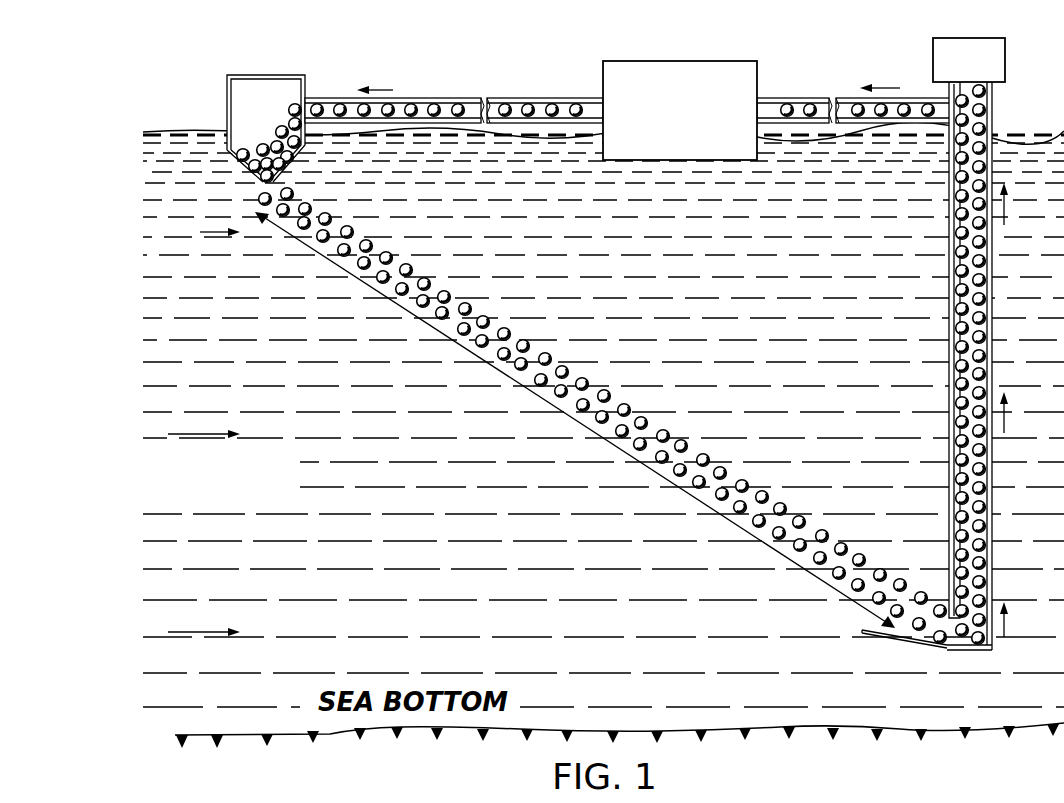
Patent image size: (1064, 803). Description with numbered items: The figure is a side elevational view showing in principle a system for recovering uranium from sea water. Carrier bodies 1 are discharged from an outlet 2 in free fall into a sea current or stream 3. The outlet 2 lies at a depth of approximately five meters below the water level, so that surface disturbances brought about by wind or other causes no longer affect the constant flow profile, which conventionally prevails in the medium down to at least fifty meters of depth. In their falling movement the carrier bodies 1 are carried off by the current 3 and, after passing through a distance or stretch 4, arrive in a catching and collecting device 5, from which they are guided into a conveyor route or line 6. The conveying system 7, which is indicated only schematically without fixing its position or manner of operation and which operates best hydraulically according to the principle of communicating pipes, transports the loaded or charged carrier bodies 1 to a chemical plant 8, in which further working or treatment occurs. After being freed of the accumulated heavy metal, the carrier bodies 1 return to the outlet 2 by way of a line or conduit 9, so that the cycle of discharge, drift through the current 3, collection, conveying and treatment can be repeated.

The carrier bodies 1 is at (332, 222).
The outlet 2 is at (258, 195).
The sea current 3 is at (188, 433).
The distance 4 is at (575, 420).
The catching and collecting device 5 is at (904, 646).
The conveyor route 6 is at (993, 316).
The conveying system 7 is at (969, 60).
The chemical plant 8 is at (680, 110).
The line 9 is at (427, 101).